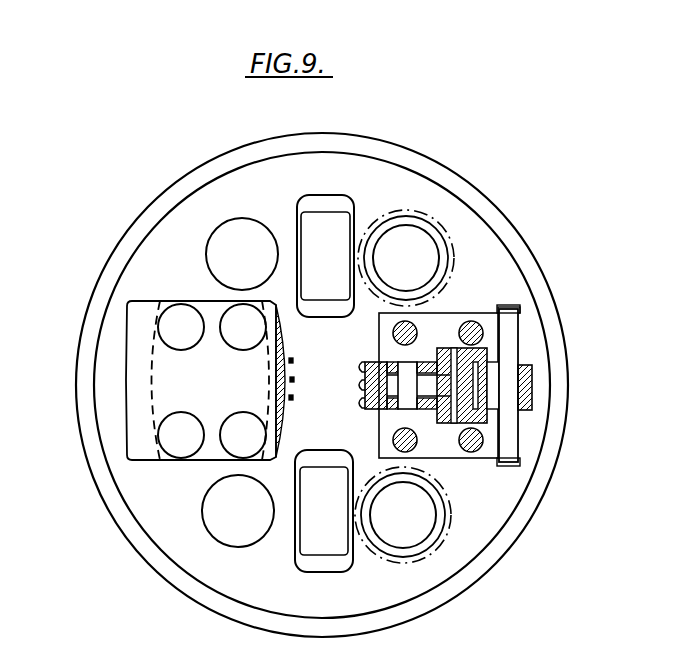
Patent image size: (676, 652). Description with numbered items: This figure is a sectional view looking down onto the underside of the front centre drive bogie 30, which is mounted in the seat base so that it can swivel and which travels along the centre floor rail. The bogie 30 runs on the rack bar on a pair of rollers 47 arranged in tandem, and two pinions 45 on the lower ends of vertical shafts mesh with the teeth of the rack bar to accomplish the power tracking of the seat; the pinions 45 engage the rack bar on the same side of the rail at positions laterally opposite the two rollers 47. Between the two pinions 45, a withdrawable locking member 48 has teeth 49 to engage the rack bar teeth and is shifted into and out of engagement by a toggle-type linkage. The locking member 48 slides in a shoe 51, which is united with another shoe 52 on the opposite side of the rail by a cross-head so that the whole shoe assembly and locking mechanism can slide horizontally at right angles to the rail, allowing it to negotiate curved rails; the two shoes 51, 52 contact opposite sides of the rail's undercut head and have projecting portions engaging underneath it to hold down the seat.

The front centre drive bogie 30 is at (487, 257).
The pinions 45 is at (430, 237).
The rollers 47 is at (317, 220).
The locking member 48 is at (392, 410).
The teeth 49 is at (360, 382).
The shoe 51 is at (447, 330).
The shoe 52 is at (260, 400).